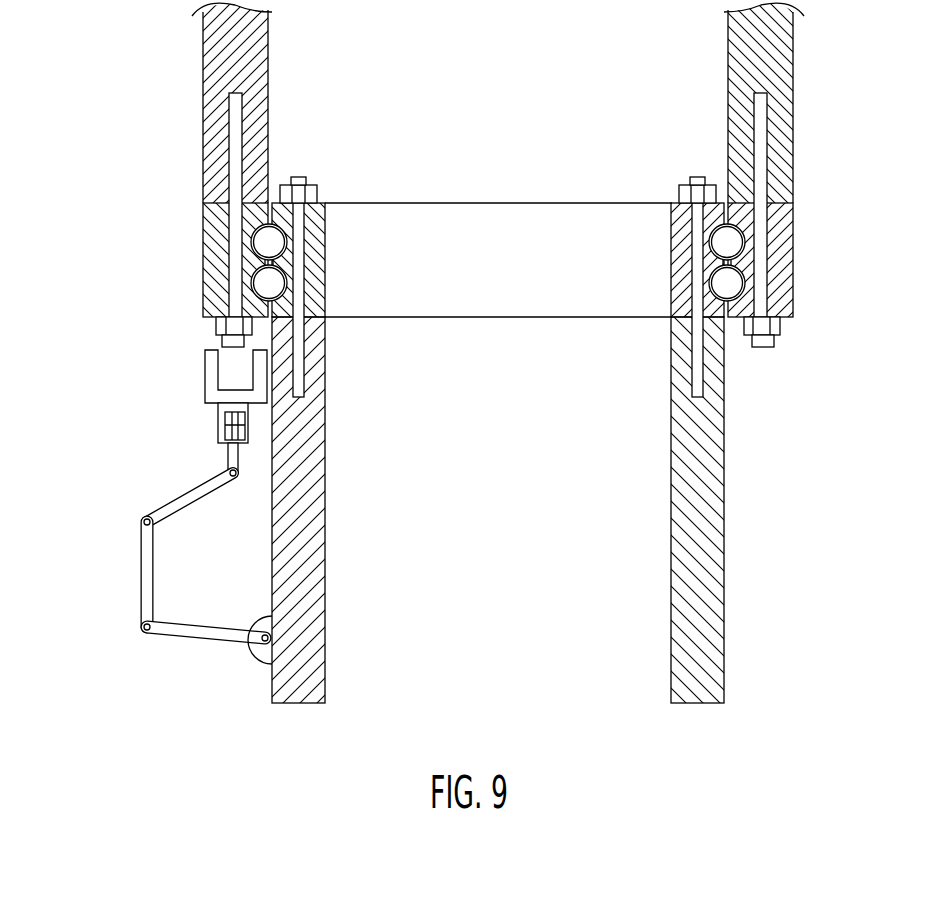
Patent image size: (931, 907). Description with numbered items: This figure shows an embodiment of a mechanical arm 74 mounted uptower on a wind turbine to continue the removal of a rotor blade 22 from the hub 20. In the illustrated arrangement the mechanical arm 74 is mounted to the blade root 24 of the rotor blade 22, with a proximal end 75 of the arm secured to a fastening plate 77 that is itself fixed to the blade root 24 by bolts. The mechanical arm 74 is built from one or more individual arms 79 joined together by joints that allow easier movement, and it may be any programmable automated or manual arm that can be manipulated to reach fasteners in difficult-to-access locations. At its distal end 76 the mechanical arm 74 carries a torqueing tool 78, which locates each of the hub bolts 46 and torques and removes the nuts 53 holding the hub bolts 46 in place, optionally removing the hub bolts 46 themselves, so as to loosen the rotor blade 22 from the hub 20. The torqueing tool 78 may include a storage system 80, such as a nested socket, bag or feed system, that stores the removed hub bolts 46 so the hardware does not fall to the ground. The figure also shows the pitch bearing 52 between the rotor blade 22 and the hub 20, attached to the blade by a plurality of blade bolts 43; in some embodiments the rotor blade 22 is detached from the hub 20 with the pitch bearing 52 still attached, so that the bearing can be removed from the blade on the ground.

The hub 20 is at (194, 43).
The rotor blade 22 is at (334, 515).
The blade root 24 is at (325, 545).
The blade bolts 43 is at (297, 345).
The hub bolts 46 is at (229, 152).
The pitch bearing 52 is at (194, 257).
The nuts 53 is at (216, 320).
The mechanical arm 74 is at (150, 546).
The proximal end 75 is at (233, 659).
The distal end 76 is at (190, 373).
The fastening plate 77 is at (262, 624).
The torqueing tool 78 is at (212, 395).
The individual arms 79 is at (167, 633).
The storage system 80 is at (218, 432).